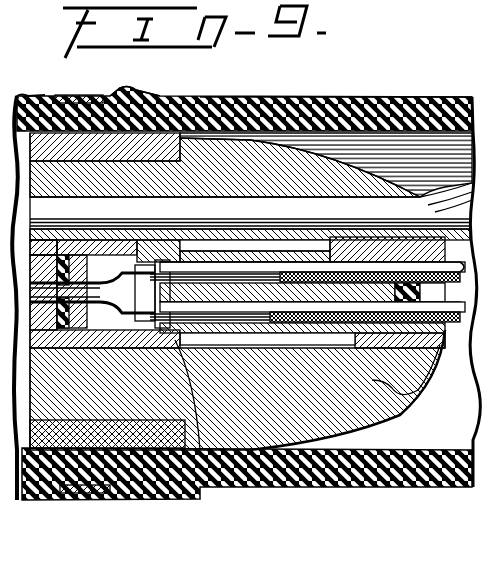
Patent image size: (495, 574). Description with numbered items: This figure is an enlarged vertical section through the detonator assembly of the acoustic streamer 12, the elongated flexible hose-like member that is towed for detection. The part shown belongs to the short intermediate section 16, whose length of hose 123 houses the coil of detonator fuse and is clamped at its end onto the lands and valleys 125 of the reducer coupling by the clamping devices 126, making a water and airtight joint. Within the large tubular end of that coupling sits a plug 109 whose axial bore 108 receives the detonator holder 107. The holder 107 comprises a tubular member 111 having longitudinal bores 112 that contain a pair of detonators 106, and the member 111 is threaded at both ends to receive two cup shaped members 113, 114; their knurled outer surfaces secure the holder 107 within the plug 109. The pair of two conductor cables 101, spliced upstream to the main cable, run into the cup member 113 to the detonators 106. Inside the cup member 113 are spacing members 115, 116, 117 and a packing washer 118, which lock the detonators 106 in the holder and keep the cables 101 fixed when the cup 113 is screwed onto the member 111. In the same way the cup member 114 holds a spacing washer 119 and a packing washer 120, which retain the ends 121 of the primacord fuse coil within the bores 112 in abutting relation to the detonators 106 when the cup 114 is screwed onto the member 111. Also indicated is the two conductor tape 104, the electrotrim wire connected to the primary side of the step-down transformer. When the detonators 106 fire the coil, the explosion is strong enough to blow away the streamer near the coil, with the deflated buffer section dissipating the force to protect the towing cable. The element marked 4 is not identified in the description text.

The tool body 4 is at (16, 145).
The acoustic streamer 12 is at (133, 93).
The short intermediate section 16 is at (408, 97).
The two conductor cables 101 is at (124, 257).
The two conductor tape 104 is at (326, 174).
The detonators 106 is at (210, 258).
The detonator holder 107 is at (254, 247).
The axial bore 108 is at (410, 394).
The plug 109 is at (357, 425).
The tubular member 111 is at (347, 270).
The longitudinal bores 112 is at (305, 268).
The cup shaped member 113 is at (38, 204).
The cup shaped member 114 is at (412, 240).
The spacing member 115 is at (62, 250).
The spacing member 116 is at (80, 350).
The spacing member 117 is at (200, 487).
The packing washer 118 is at (42, 347).
The spacing washer 119 is at (416, 339).
The packing washer 120 is at (436, 372).
The ends of coil of detonator fuse 121 is at (319, 287).
The hose 123 is at (312, 97).
The valleys 125 is at (47, 96).
The clamping devices 126 is at (88, 85).